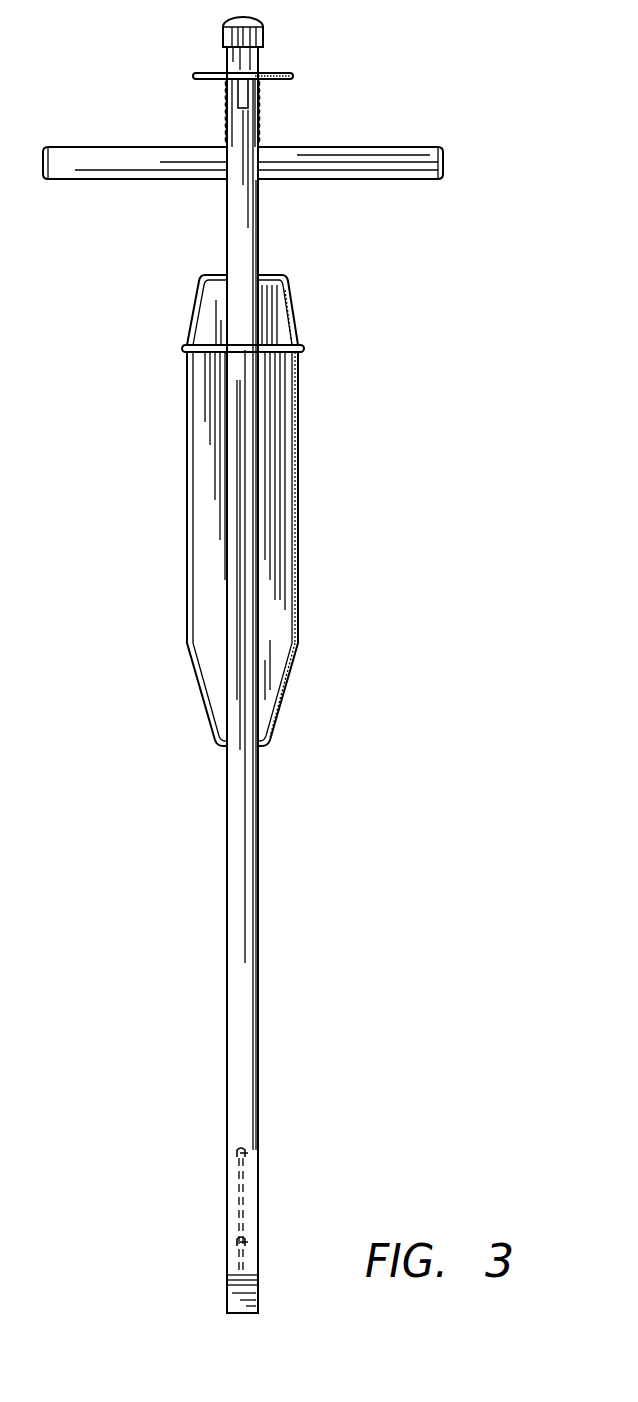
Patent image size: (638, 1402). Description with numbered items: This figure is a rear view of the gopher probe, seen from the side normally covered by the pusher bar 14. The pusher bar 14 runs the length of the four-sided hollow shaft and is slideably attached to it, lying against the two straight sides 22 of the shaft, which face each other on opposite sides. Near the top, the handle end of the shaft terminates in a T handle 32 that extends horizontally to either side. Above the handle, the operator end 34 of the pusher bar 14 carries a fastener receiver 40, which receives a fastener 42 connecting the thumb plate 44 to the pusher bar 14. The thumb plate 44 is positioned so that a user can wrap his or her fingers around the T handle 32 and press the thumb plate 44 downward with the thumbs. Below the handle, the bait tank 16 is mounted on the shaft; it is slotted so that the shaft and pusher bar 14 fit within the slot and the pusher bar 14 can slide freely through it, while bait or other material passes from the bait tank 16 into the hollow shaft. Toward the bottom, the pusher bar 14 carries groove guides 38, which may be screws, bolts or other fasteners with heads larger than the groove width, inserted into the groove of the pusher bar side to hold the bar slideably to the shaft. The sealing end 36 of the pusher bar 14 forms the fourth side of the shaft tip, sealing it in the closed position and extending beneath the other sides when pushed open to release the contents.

The pusher bar 14 is at (245, 120).
The bait tank 16 is at (342, 490).
The straight sides 22 is at (227, 1062).
The T handle 32 is at (445, 163).
The operator end 34 is at (227, 108).
The sealing end 36 is at (250, 1315).
The groove guides 38 is at (246, 1153).
The fastener receiver 40 is at (250, 87).
The fastener 42 is at (262, 19).
The thumb plate 44 is at (312, 77).